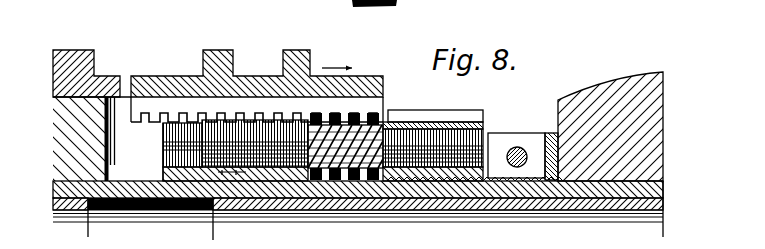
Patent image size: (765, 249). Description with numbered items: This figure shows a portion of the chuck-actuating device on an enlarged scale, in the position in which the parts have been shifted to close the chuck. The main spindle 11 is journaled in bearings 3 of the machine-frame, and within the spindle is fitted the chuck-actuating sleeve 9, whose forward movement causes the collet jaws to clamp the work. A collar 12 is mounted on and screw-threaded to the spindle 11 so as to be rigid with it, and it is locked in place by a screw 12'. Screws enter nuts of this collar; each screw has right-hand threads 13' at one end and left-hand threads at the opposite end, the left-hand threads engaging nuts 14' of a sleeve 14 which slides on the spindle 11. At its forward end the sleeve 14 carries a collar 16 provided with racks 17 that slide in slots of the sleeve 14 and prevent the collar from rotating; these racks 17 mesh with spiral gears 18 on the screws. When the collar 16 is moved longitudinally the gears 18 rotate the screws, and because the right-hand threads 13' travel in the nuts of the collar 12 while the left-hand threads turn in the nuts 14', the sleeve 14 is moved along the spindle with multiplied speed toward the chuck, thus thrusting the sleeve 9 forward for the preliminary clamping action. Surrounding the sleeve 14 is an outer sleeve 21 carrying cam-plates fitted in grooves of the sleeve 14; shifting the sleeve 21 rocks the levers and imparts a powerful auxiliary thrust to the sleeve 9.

The sleeve 21 is at (71, 49).
The sleeve 14 is at (95, 100).
The collar 16 is at (154, 84).
The spiral gears 18 is at (318, 112).
The nuts of sleeve 14' is at (244, 93).
The racks 17 is at (330, 108).
The collar 12 is at (323, 185).
The screw 12' is at (442, 107).
The right-hand threads 13' is at (475, 133).
The bearings 3 is at (596, 100).
The main spindle 11 is at (573, 190).
The sleeve 9 is at (607, 208).